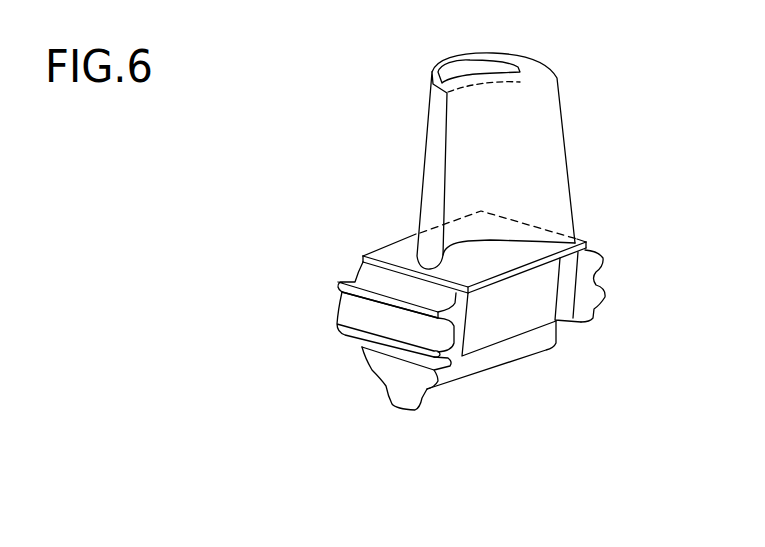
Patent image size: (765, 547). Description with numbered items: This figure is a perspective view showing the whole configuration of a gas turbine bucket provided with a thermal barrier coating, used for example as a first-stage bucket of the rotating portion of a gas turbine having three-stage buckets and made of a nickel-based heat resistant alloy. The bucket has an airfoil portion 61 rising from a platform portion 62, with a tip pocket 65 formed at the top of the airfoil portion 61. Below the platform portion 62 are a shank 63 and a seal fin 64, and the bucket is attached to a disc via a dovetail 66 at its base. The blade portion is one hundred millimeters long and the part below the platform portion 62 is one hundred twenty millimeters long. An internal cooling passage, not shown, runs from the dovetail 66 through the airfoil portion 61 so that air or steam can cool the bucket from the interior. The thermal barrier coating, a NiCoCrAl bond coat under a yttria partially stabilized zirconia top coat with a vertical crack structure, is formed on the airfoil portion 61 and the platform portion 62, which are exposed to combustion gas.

The airfoil portion 61 is at (545, 147).
The platform portion 62 is at (392, 253).
The shank 63 is at (543, 305).
The seal fin 64 is at (337, 328).
The tip pocket 65 is at (475, 62).
The dovetail 66 is at (497, 373).